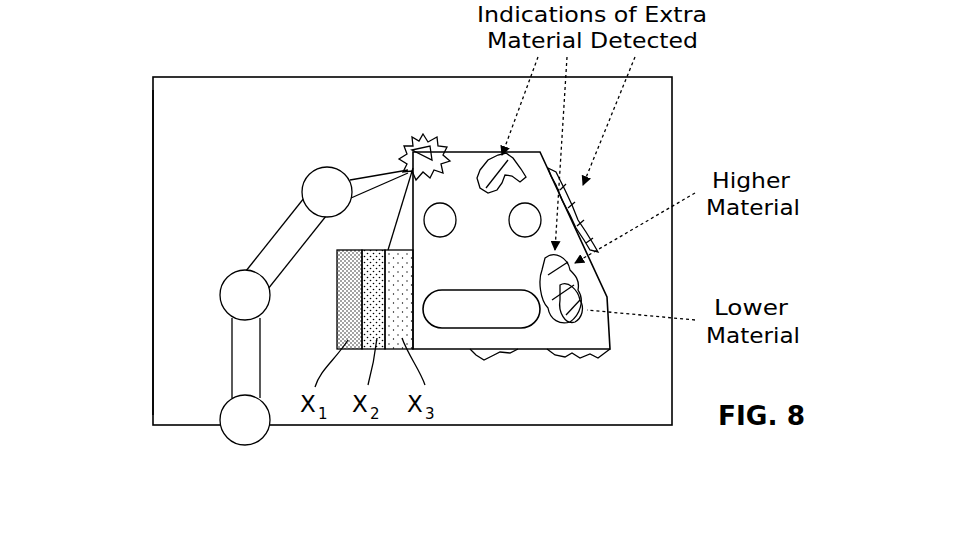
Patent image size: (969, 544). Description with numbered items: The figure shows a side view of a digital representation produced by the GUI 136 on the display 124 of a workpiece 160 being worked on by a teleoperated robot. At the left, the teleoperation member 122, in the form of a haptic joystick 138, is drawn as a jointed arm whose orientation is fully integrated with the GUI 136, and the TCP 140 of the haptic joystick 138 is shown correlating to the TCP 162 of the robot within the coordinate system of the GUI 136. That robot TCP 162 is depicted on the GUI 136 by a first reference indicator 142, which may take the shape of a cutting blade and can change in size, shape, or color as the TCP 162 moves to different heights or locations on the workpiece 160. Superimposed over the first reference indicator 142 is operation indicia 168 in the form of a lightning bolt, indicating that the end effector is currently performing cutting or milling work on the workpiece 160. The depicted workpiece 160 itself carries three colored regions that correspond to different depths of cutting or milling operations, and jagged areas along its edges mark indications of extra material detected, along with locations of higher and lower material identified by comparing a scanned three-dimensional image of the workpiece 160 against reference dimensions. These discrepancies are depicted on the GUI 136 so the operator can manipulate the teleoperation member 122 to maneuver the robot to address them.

The display 124 is at (186, 77).
The GUI 136 is at (178, 221).
The teleoperation member 122 is at (212, 306).
The haptic joystick 138 is at (232, 360).
The TCP of haptic joystick 140 is at (384, 104).
The TCP of robot 162 is at (384, 104).
The first reference indicator 142 is at (384, 104).
The operation indicia 168 is at (455, 113).
The workpiece 160 is at (537, 340).